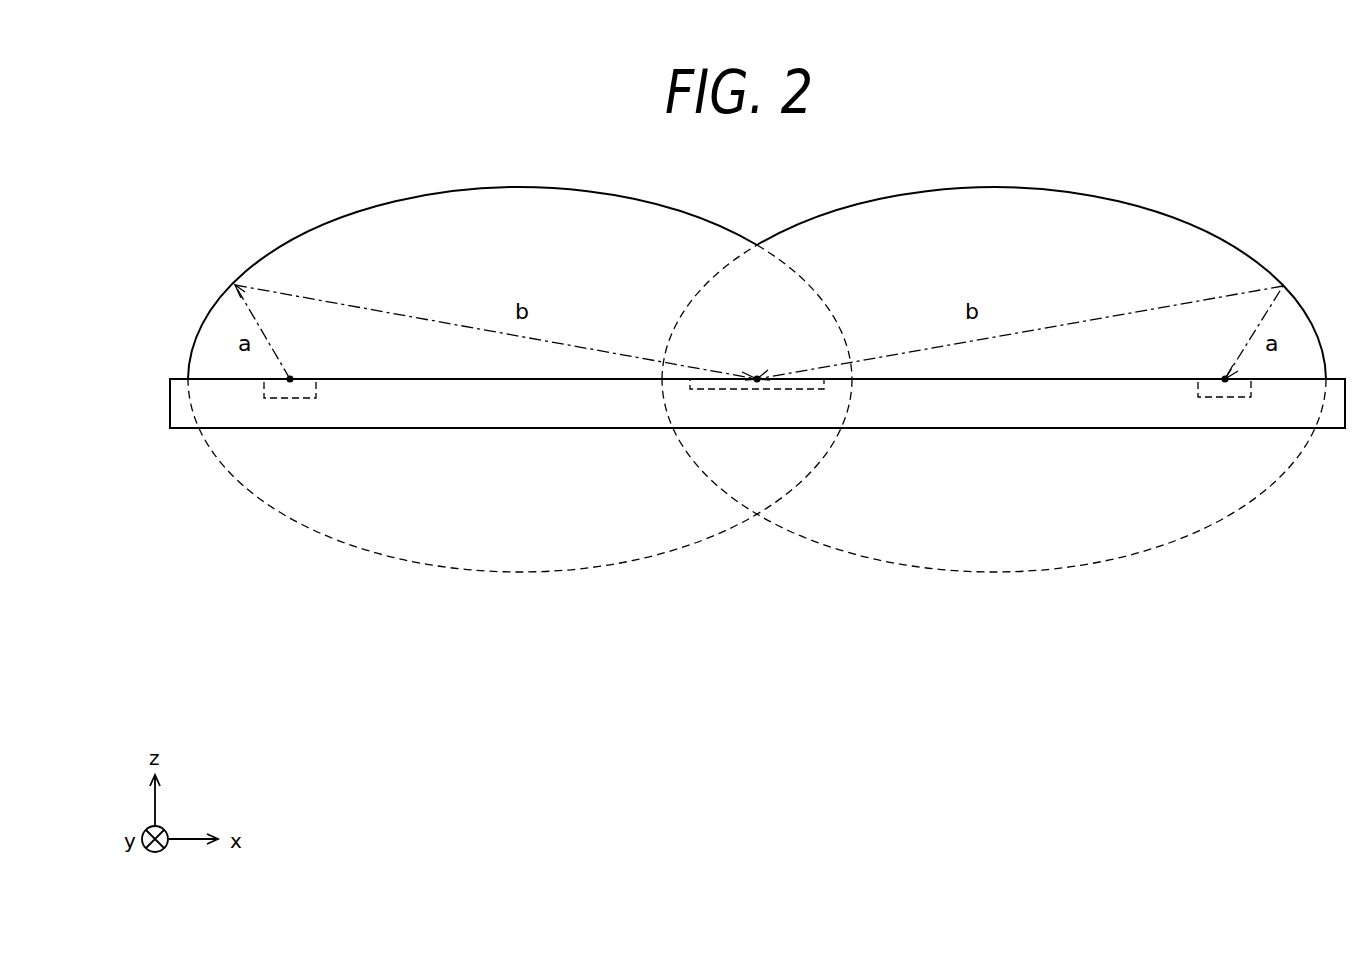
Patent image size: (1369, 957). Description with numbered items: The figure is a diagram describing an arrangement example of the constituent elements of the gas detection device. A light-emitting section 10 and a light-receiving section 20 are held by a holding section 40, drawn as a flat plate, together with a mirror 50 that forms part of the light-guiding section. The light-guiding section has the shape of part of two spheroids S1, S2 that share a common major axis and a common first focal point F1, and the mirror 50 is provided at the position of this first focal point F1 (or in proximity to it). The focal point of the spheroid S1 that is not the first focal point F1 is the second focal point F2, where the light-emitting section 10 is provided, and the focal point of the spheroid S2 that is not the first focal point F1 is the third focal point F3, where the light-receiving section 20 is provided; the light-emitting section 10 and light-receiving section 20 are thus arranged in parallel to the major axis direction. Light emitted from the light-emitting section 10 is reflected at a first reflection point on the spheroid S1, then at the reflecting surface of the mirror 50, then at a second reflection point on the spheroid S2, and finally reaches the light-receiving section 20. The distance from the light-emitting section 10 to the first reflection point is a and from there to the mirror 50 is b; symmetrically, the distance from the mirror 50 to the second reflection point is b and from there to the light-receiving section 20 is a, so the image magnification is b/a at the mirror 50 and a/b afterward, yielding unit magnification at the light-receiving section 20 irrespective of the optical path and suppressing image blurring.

The light-emitting section 10 is at (290, 398).
The light-receiving section 20 is at (1225, 397).
The holding section 40 is at (481, 428).
The mirror 50 is at (757, 389).
The spheroid S1 is at (523, 572).
The spheroid S2 is at (995, 572).
The first focal point F1 is at (757, 379).
The second focal point F2 is at (290, 379).
The third focal point F3 is at (1225, 379).